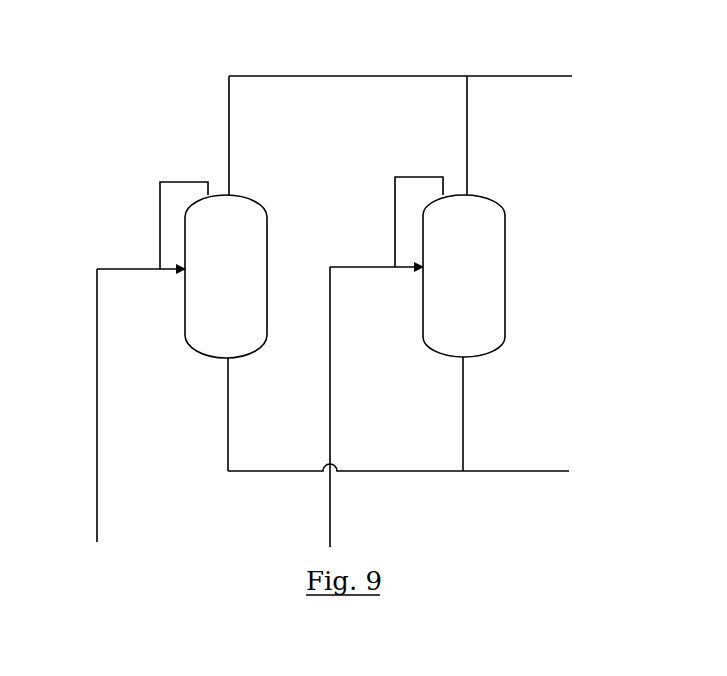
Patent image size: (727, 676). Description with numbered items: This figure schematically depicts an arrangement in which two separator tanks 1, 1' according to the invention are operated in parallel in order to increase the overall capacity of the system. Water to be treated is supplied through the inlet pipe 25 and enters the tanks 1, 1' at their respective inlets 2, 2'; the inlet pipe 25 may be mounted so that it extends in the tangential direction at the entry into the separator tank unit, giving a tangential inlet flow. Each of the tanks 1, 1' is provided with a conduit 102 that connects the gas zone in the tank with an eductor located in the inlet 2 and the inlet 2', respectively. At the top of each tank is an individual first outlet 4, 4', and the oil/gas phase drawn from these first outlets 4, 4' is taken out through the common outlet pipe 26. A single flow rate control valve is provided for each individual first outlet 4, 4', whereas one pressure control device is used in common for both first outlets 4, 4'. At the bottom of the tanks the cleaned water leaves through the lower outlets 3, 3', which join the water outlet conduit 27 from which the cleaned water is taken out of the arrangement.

The separator tank 1 is at (248, 266).
The separator tank 1' is at (498, 266).
The inlet 2 is at (141, 232).
The inlet 2' is at (377, 228).
The bottom outlet line of first vessel 3 is at (249, 414).
The bottom outlet line of second vessel 3' is at (485, 414).
The first outlet 4 is at (248, 135).
The first outlet 4' is at (487, 135).
The inlet pipe 25 is at (128, 272).
The outlet pipe 26 is at (547, 75).
The water outlet conduit 27 is at (528, 472).
The conduit 102 is at (180, 182).